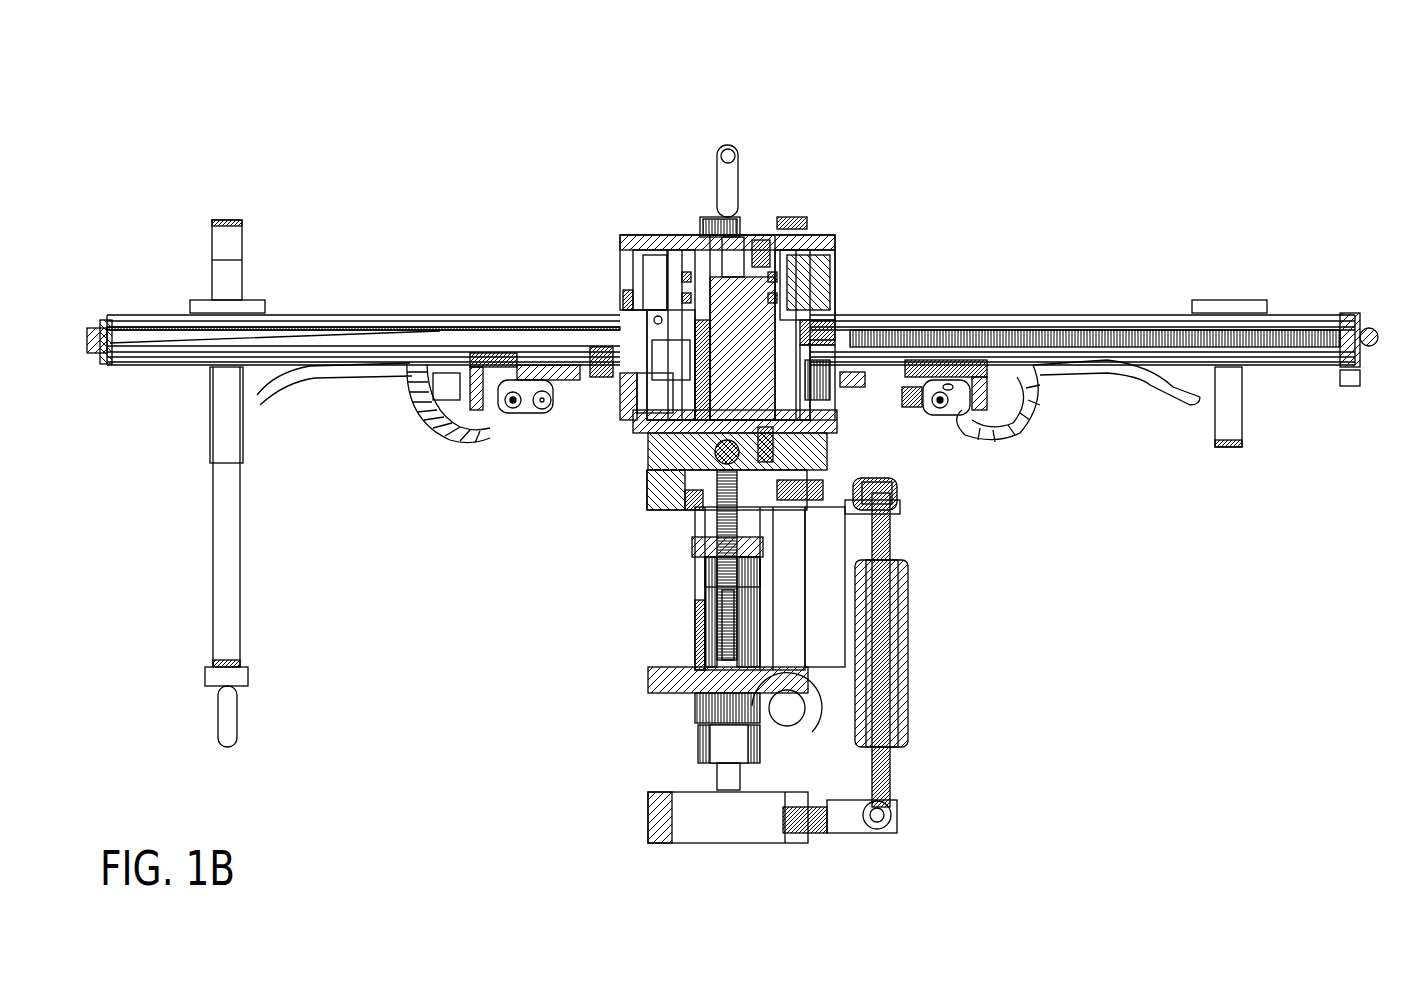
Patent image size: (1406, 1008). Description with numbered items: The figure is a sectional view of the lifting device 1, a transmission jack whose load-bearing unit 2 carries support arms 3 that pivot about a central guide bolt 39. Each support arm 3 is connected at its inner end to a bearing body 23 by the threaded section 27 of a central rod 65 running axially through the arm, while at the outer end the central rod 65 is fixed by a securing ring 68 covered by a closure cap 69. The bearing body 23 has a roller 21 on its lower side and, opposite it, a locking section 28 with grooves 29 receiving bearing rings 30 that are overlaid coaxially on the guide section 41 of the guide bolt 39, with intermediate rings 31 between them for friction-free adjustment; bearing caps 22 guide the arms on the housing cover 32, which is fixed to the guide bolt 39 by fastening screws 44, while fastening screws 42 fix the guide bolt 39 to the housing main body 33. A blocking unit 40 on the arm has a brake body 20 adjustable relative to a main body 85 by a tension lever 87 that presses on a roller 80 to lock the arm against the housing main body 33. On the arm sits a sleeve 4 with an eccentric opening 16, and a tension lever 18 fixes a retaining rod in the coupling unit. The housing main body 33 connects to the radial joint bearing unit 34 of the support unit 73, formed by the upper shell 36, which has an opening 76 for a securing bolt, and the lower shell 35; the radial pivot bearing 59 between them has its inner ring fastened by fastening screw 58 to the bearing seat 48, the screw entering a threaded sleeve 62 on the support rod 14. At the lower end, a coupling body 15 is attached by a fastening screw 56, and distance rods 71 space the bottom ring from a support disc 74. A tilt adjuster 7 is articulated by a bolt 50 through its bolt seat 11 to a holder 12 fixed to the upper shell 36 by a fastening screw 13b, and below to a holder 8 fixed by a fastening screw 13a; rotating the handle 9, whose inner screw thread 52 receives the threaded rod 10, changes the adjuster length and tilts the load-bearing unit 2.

The lifting device 1 is at (345, 128).
The load-bearing unit 2 is at (903, 178).
The support arm 3 is at (280, 315).
The sleeve 4 is at (252, 303).
The tilt adjuster 7 is at (930, 658).
The holder 8 is at (843, 823).
The handle 9 is at (902, 720).
The threaded rod 10 is at (880, 777).
The bolt seat 11 is at (890, 490).
The holder 12 is at (853, 510).
The fastening screw 13a is at (808, 817).
The fastening screw 13b is at (855, 480).
The support rod 14 is at (703, 633).
The coupling body 15 is at (702, 750).
The opening 16 is at (1223, 300).
The tension lever 18 is at (243, 437).
The brake body 20 is at (593, 413).
The roller 21 is at (637, 413).
The bearing cap 22 is at (780, 258).
The bearing body 23 is at (820, 370).
The threaded section 27 is at (700, 358).
The locking section 28 is at (845, 288).
The groove 29 is at (660, 278).
The bearing ring 30 is at (682, 267).
The intermediate ring 31 is at (785, 298).
The housing cover 32 is at (643, 282).
The housing main body 33 is at (657, 453).
The radial joint bearing unit 34 is at (823, 538).
The lower shell 35 is at (690, 517).
The upper shell 36 is at (770, 470).
The guide bolt 39 is at (740, 270).
The blocking unit 40 is at (470, 460).
The guide section 41 is at (718, 290).
The fastening screw 42 is at (657, 338).
The fastening screw 44 is at (757, 260).
The bearing seat 48 is at (707, 548).
The bolt 50 is at (885, 498).
The inner screw thread 52 is at (880, 572).
The fastening screw 56 is at (727, 693).
The fastening screw 58 is at (730, 530).
The radial pivot bearing 59 is at (707, 490).
The threaded sleeve 62 is at (737, 595).
The central rod 65 is at (1283, 340).
The securing ring 68 is at (103, 323).
The closure cap 69 is at (90, 337).
The distance rod 71 is at (785, 643).
The support unit 73 is at (543, 797).
The support disc 74 is at (660, 677).
The opening 76 is at (723, 150).
The roller 80 is at (907, 410).
The main body 85 is at (903, 373).
The tension lever 87 is at (1180, 392).